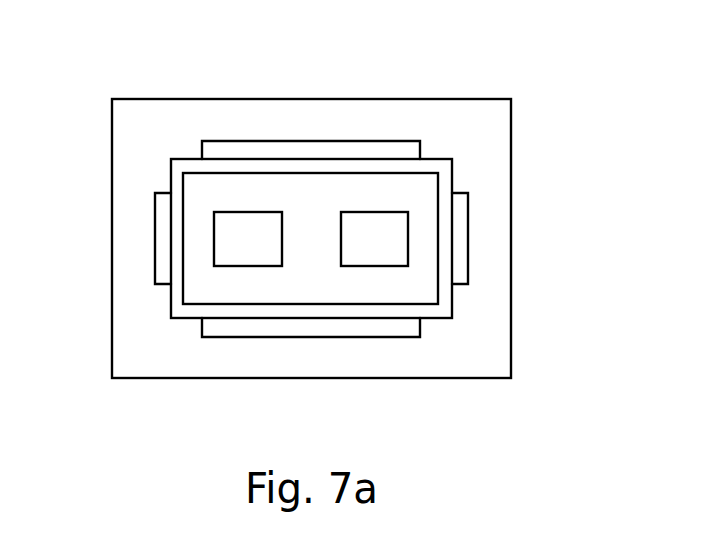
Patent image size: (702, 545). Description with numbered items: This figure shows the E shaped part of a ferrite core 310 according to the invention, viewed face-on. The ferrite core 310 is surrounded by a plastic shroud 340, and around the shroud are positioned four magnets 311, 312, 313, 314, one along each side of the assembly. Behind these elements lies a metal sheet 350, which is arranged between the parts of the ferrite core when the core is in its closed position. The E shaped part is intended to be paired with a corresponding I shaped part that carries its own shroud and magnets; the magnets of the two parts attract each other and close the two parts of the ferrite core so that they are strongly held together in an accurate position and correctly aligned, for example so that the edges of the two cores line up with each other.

The E shaped part of a ferrite core 310 is at (220, 292).
The magnet 311 is at (392, 326).
The magnet 312 is at (463, 246).
The magnet 313 is at (358, 140).
The magnet 314 is at (155, 240).
The plastic shroud 340 is at (175, 308).
The metal sheet 350 is at (464, 361).